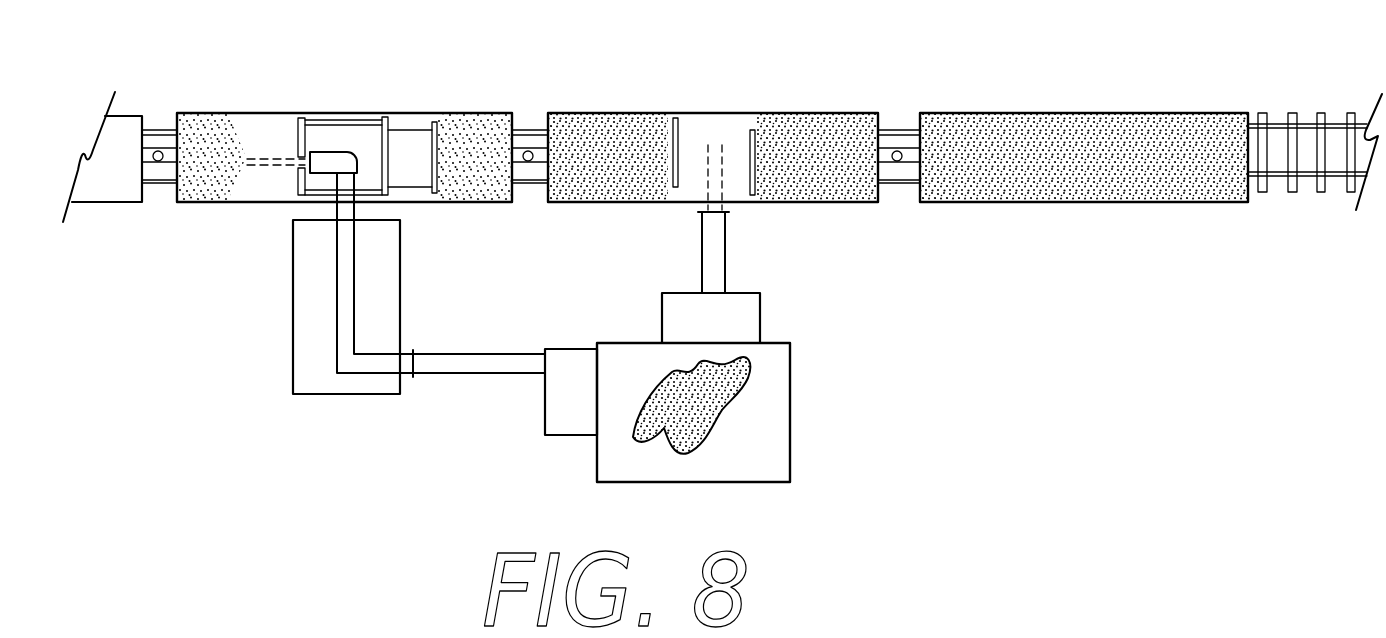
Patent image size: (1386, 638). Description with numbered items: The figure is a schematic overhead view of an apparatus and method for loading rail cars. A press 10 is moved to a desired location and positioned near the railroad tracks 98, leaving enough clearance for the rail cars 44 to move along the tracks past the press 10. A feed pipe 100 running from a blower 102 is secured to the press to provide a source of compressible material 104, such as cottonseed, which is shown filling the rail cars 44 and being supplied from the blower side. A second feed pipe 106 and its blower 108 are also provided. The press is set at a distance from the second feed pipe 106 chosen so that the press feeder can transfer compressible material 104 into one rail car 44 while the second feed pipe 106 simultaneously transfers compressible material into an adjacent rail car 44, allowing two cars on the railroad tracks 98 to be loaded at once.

The press 10 is at (265, 334).
The rail cars 44 is at (350, 101).
The railroad tracks 98 is at (1280, 125).
The feed pipe 100 is at (487, 368).
The blower 102 is at (570, 433).
The compressible material 104 is at (208, 132).
The second feed pipe 106 is at (722, 225).
The blower 108 is at (738, 317).